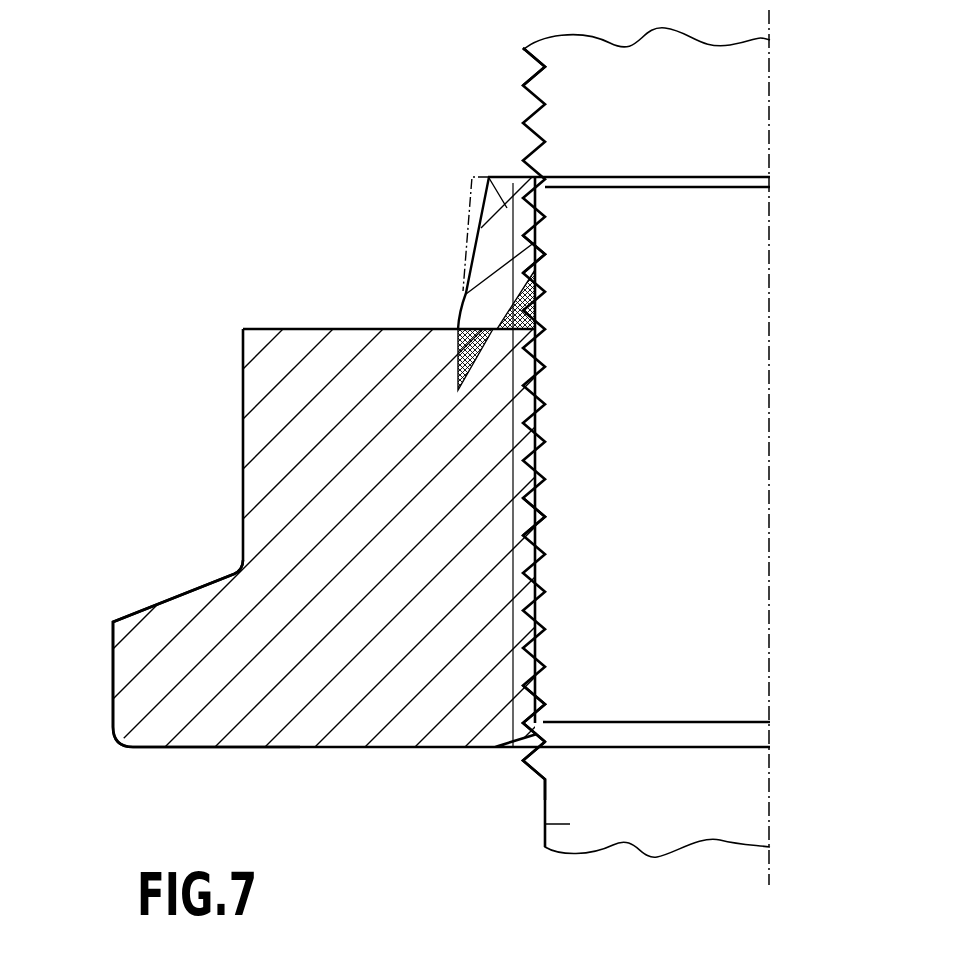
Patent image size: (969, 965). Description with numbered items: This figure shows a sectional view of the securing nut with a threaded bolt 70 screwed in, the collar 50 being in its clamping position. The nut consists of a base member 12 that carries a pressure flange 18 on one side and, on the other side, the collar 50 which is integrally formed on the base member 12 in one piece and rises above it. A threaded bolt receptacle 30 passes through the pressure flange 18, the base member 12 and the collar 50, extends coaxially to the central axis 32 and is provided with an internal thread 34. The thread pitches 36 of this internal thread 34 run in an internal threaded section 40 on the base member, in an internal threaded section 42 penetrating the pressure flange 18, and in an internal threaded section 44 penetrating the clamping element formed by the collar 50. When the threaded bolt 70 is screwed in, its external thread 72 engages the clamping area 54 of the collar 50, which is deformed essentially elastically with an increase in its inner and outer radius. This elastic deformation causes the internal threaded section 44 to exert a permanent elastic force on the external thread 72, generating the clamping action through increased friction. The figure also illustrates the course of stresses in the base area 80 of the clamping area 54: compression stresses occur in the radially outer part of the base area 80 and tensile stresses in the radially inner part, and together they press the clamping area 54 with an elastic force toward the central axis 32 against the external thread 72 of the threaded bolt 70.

The base member 12 is at (262, 416).
The pressure flange 18 is at (138, 698).
The threaded bolt receptacle 30 is at (580, 344).
The central axis 32 is at (770, 294).
The internal thread 34 is at (578, 594).
The thread pitches 36 is at (558, 185).
The internal threaded section on the base member 40 is at (528, 502).
The internal threaded section on the pressure flange 42 is at (535, 678).
The internal threaded section on the clamping element 44 is at (525, 237).
The collar 50 is at (432, 214).
The clamping area 54 is at (500, 222).
The threaded bolt 70 is at (560, 824).
The external thread 72 is at (526, 762).
The base area 80 is at (493, 328).